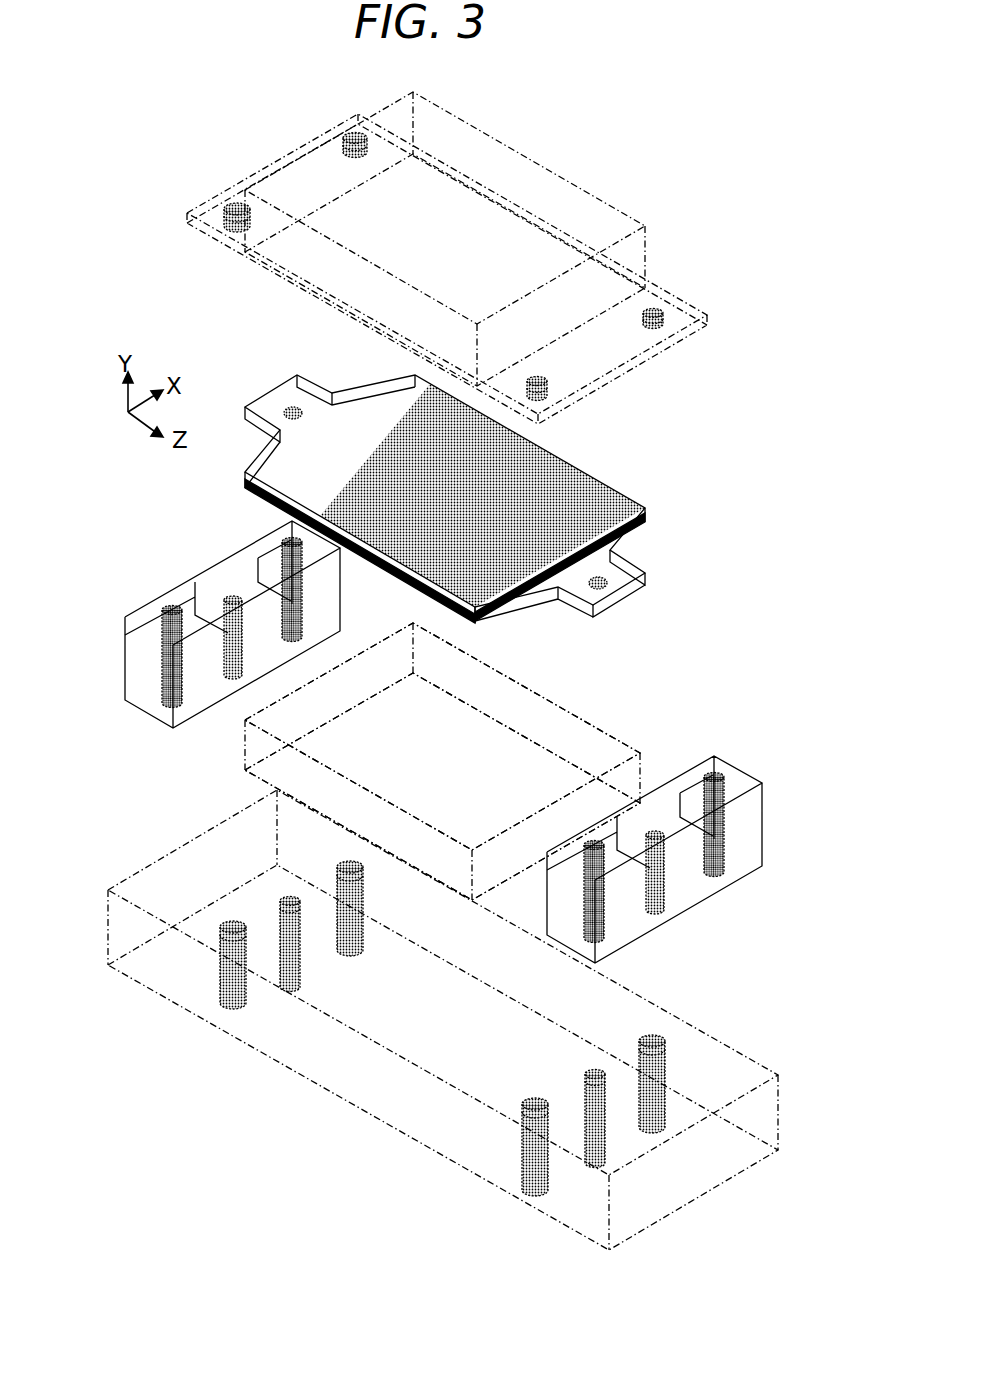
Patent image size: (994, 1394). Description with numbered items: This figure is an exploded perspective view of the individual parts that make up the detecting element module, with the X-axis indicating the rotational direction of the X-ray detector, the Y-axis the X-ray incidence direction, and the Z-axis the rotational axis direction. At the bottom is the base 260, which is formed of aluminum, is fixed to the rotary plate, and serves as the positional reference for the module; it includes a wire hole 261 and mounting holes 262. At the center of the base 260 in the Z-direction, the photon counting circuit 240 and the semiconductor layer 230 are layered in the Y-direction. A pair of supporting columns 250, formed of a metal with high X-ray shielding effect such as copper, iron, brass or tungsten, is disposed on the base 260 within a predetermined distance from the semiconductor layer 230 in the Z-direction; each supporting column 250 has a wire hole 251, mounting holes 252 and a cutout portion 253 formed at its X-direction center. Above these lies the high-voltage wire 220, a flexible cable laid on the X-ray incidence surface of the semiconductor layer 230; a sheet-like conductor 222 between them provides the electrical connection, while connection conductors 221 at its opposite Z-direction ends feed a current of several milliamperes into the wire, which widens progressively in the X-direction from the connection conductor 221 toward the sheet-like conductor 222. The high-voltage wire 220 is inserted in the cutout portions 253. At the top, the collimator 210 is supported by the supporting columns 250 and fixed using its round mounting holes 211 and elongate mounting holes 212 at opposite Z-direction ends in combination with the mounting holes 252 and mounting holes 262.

The collimator 210 is at (645, 240).
The mounting hole 211 is at (547, 388).
The mounting hole 212 is at (345, 143).
The high-voltage wire 220 is at (638, 497).
The connection conductor 221 is at (287, 412).
The sheet-like conductor 222 is at (477, 617).
The semiconductor layer 230 is at (552, 700).
The photon counting circuit 240 is at (442, 761).
The supporting column 250 is at (162, 603).
The wire hole 251 is at (232, 667).
The mounting hole 252 is at (178, 615).
The cutout portion 253 is at (215, 572).
The base 260 is at (140, 892).
The wire hole 261 is at (290, 962).
The mounting hole 262 is at (222, 990).